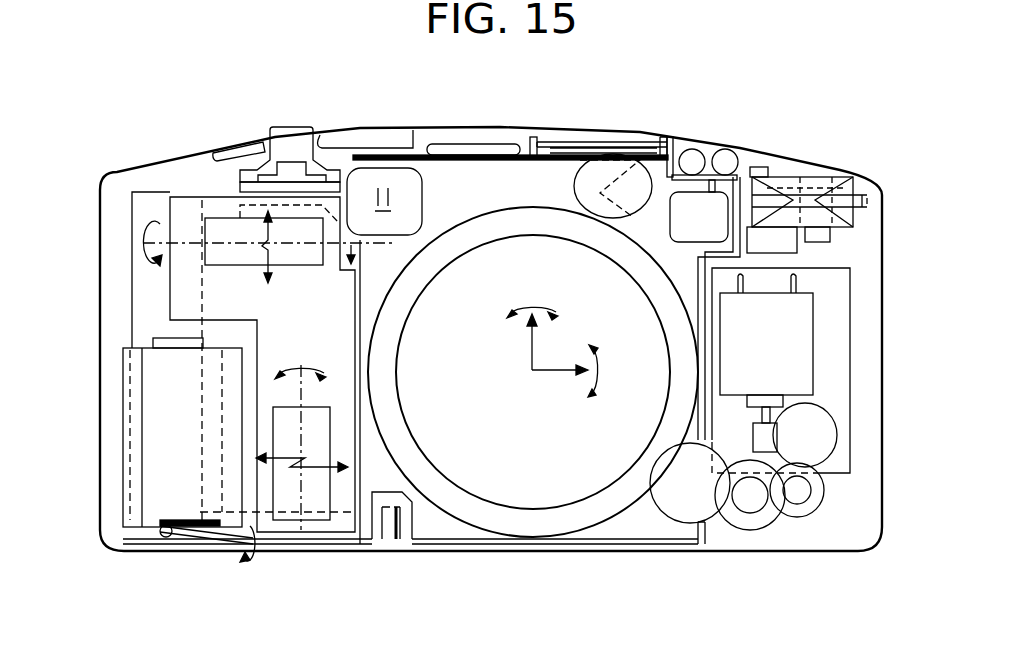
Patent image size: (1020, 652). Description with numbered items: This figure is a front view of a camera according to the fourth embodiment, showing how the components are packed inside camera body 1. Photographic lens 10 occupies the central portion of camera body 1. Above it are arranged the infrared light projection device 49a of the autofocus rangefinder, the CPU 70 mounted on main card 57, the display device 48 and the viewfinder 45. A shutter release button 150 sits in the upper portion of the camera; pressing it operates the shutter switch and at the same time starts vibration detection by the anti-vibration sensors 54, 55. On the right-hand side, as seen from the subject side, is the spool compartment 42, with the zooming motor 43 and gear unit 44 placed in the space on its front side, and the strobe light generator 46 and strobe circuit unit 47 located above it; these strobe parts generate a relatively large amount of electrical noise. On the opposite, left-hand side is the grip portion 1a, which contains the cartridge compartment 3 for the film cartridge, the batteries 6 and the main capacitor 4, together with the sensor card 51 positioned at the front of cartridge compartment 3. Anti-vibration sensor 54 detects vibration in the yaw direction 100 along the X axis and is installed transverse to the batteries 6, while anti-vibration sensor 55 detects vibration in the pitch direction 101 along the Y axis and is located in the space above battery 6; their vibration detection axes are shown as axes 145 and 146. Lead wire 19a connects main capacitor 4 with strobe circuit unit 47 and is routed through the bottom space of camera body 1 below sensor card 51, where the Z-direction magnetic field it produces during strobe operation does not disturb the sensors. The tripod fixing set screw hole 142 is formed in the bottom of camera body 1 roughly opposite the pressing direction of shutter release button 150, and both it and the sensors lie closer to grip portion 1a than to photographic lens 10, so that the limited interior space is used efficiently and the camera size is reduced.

The camera body 1 is at (448, 125).
The grip portion 1a is at (101, 230).
The cartridge compartment 3 is at (353, 233).
The main capacitor 4 is at (145, 198).
The battery 6 is at (123, 367).
The photographic lens 10 is at (578, 483).
The lead wire 19a is at (333, 547).
The spool compartment 42 is at (845, 305).
The zooming motor 43 is at (797, 337).
The gear unit 44 is at (758, 525).
The viewfinder 45 is at (683, 149).
The strobe light generator 46 is at (862, 195).
The strobe circuit unit 47 is at (722, 176).
The display device 48 is at (560, 150).
The infrared light projection device 49a is at (593, 172).
The sensor card 51 is at (217, 203).
The anti-vibration sensor 54 is at (290, 502).
The anti-vibration sensor 55 is at (235, 267).
The main card 57 is at (370, 155).
The CPU 70 is at (503, 152).
The yaw direction 100 is at (553, 373).
The pitch direction 101 is at (533, 340).
The tripod fixing set screw hole 142 is at (393, 550).
The vibration detection axis 145 is at (385, 246).
The vibration detection axis 146 is at (300, 393).
The shutter release button 150 is at (295, 137).